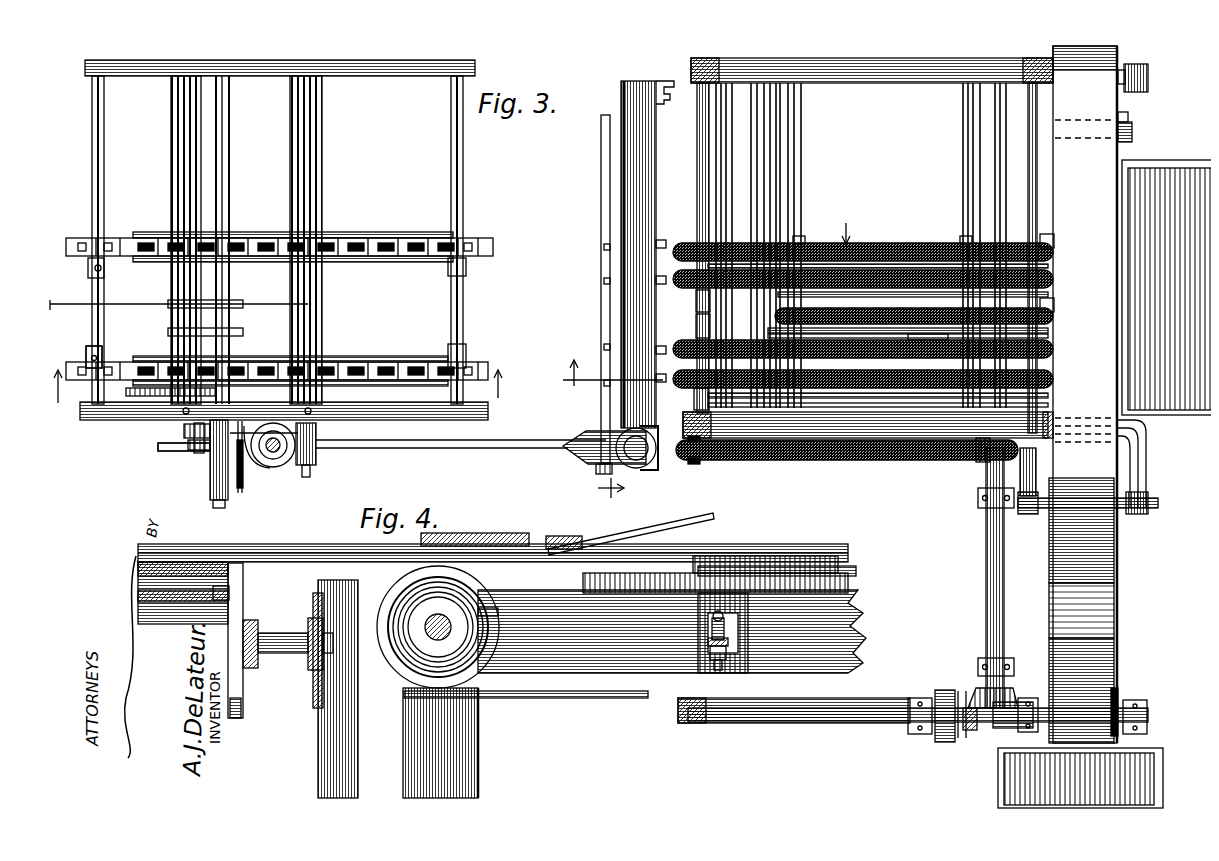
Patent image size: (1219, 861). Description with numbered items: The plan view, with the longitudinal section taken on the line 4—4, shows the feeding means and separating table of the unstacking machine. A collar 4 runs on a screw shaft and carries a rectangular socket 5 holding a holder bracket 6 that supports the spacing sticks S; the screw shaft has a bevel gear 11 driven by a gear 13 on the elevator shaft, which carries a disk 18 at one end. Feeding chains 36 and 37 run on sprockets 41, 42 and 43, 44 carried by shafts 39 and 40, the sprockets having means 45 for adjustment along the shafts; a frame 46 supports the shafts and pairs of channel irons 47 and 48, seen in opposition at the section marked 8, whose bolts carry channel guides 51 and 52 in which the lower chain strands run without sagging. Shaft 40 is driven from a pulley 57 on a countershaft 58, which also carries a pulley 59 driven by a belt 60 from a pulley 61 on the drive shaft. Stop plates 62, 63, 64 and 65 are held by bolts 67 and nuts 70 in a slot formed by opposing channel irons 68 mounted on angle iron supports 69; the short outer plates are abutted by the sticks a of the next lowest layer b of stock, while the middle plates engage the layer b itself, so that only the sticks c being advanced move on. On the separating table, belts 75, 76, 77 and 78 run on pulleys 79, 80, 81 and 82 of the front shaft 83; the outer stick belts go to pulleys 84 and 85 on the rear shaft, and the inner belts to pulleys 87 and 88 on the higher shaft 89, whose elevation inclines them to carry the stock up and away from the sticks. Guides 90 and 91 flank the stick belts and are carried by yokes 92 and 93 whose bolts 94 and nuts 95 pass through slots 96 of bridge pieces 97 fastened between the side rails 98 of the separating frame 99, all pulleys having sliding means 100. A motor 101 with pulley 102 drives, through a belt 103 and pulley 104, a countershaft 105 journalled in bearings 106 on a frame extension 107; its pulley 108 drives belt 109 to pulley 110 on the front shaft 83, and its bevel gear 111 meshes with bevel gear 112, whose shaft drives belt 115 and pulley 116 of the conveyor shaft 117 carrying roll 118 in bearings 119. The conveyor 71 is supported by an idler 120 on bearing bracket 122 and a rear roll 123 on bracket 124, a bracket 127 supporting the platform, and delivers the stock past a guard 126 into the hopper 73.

In FIG. 3, the collar 4 is at (608, 375).
In FIG. 3, the rectangular socket 5 is at (320, 442).
In FIG. 3, the holder bracket 6 is at (306, 457).
In FIG. 3, the arrow 8 is at (284, 386).
In FIG. 3, the bevel gear 11 is at (292, 455).
In FIG. 3, the gear 13 is at (265, 455).
In FIG. 3, the disk 18 is at (233, 487).
In FIG. 3, the chain 36 is at (365, 353).
In FIG. 3, the chain 37 is at (350, 228).
In FIG. 3, the shaft 39 is at (98, 194).
In FIG. 3, the shaft 40 is at (455, 210).
In FIG. 3, the sprocket 41 is at (78, 345).
In FIG. 3, the sprocket 42 is at (458, 348).
In FIG. 3, the sprocket 43 is at (80, 256).
In FIG. 3, the sprocket 44 is at (458, 262).
In FIG. 3, the adjusting means 45 is at (98, 258).
In FIG. 3, the frame 46 is at (362, 54).
In FIG. 3, the channel iron 47 is at (165, 162).
In FIG. 3, the channel iron 48 is at (312, 178).
In FIG. 3, the channel guide 51 is at (400, 352).
In FIG. 3, the channel guide 52 is at (375, 252).
In FIG. 3, the pulley 57 is at (178, 424).
In FIG. 3, the countershaft 58 is at (198, 452).
In FIG. 3, the pulley 59 is at (180, 455).
In FIG. 3, the belt 60 is at (150, 440).
In FIG. 3, the pulley 61 is at (180, 443).
In FIG. 3, the stop plate 62 is at (596, 240).
In FIG. 3, the stop plate 63 is at (596, 273).
In FIG. 3, the stop plate 64 is at (596, 339).
In FIG. 4, the stop plate 64 is at (236, 563).
In FIG. 3, the stop plate 65 is at (596, 378).
In FIG. 4, the stop plate 65 is at (240, 589).
In FIG. 4, the bolt 67 is at (262, 646).
In FIG. 3, the channel iron 68 is at (638, 168).
In FIG. 4, the channel iron 68 is at (258, 622).
In FIG. 3, the angle iron support 69 is at (660, 72).
In FIG. 4, the angle iron support 69 is at (352, 742).
In FIG. 3, the nut 70 is at (650, 232).
In FIG. 4, the nut 70 is at (332, 650).
In FIG. 3, the conveyor 71 is at (1104, 158).
In FIG. 3, the hopper 73 is at (1155, 772).
In FIG. 3, the belt 75 is at (570, 702).
In FIG. 3, the belt 76 is at (686, 508).
In FIG. 3, the belt 77 is at (890, 290).
In FIG. 3, the belt 78 is at (876, 256).
In FIG. 3, the pulley 79 is at (686, 386).
In FIG. 4, the pulley 79 is at (480, 650).
In FIG. 3, the pulley 80 is at (688, 320).
In FIG. 3, the pulley 81 is at (688, 288).
In FIG. 3, the pulley 82 is at (672, 235).
In FIG. 3, the front shaft 83 is at (692, 180).
In FIG. 4, the front shaft 83 is at (424, 626).
In FIG. 3, the pulley 84 is at (1046, 368).
In FIG. 3, the pulley 85 is at (1046, 236).
In FIG. 3, the pulley 87 is at (1046, 338).
In FIG. 3, the pulley 88 is at (1046, 272).
In FIG. 3, the shaft 89 is at (1024, 186).
In FIG. 3, the guide 90 is at (826, 555).
In FIG. 3, the guide 91 is at (843, 226).
In FIG. 3, the yoke 92 is at (676, 592).
In FIG. 3, the yoke 93 is at (792, 228).
In FIG. 4, the bolt 94 is at (724, 612).
In FIG. 4, the nut 95 is at (700, 656).
In FIG. 3, the slot 96 is at (794, 162).
In FIG. 4, the slot 96 is at (690, 628).
In FIG. 3, the bridge piece 97 is at (772, 136).
In FIG. 4, the bridge piece 97 is at (728, 626).
In FIG. 3, the side rail 98 is at (888, 60).
In FIG. 4, the side rail 98 is at (560, 650).
In FIG. 3, the separating table frame 99 is at (700, 55).
In FIG. 4, the separating table frame 99 is at (468, 770).
In FIG. 3, the adjusting means 100 is at (1046, 297).
In FIG. 3, the motor 101 is at (744, 232).
In FIG. 3, the pulley 102 is at (768, 322).
In FIG. 3, the belt 103 is at (822, 298).
In FIG. 3, the pulley 104 is at (944, 318).
In FIG. 3, the countershaft 105 is at (986, 154).
In FIG. 3, the bearing 106 is at (970, 492).
In FIG. 3, the extension 107 is at (978, 552).
In FIG. 3, the pulley 108 is at (972, 454).
In FIG. 3, the belt 109 is at (838, 452).
In FIG. 3, the pulley 110 is at (684, 456).
In FIG. 3, the bevel gear 111 is at (1004, 680).
In FIG. 3, the bevel gear 112 is at (1018, 506).
In FIG. 3, the belt 115 is at (934, 728).
In FIG. 3, the pulley 116 is at (928, 690).
In FIG. 3, the conveyor shaft 117 is at (982, 720).
In FIG. 3, the roll 118 is at (1110, 690).
In FIG. 3, the bearing 119 is at (1135, 700).
In FIG. 3, the idler 120 is at (1112, 508).
In FIG. 3, the bearing bracket 122 is at (1136, 476).
In FIG. 3, the rear roll 123 is at (1122, 55).
In FIG. 3, the bearing bracket 124 is at (1122, 110).
In FIG. 3, the guard 126 is at (1166, 287).
In FIG. 3, the bracket 127 is at (1126, 125).
In FIG. 4, the spacing sticks a is at (185, 575).
In FIG. 4, the layer of stock b is at (160, 555).
In FIG. 4, the sticks c is at (312, 540).
In FIG. 4, the spacing sticks S is at (489, 530).